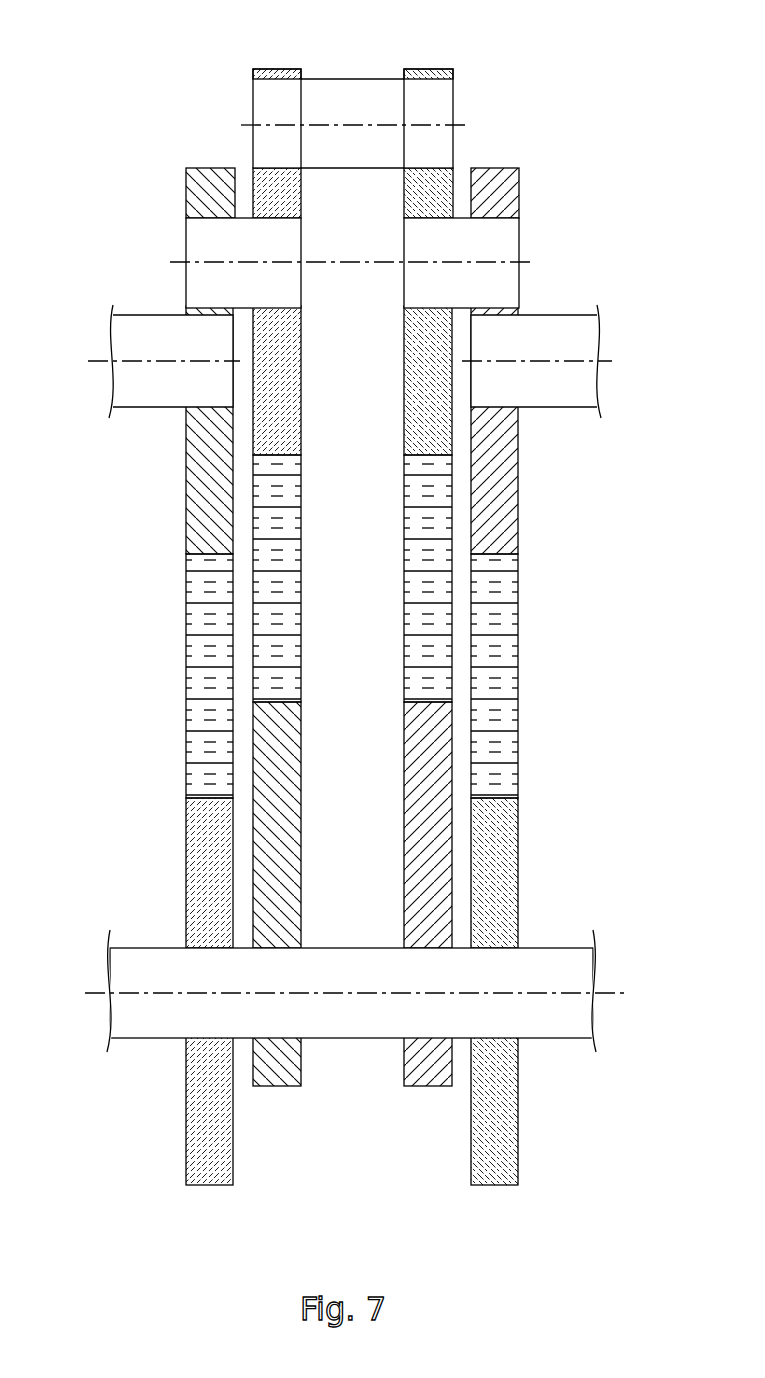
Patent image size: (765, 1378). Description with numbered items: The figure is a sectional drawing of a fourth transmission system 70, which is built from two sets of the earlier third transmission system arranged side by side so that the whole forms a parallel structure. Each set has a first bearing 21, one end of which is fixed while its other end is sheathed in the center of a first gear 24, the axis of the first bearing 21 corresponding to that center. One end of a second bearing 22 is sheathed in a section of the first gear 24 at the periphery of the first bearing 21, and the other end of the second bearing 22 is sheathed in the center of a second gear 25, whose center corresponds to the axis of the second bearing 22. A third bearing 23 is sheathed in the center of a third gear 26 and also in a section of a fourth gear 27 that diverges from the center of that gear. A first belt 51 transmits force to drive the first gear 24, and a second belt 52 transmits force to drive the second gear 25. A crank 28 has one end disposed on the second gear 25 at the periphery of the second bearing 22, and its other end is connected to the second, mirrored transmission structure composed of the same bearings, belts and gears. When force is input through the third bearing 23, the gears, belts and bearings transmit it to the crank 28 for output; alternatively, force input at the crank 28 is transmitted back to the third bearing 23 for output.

The transmission system 70 is at (137, 111).
The crank 28 is at (360, 86).
The second bearing 22 is at (423, 257).
The first bearing 21 is at (123, 340).
The second gear 25 is at (420, 390).
The first gear 24 is at (195, 500).
The second belt 52 is at (418, 558).
The first belt 51 is at (195, 660).
The fourth gear 27 is at (415, 832).
The third gear 26 is at (195, 862).
The third bearing 23 is at (356, 1020).